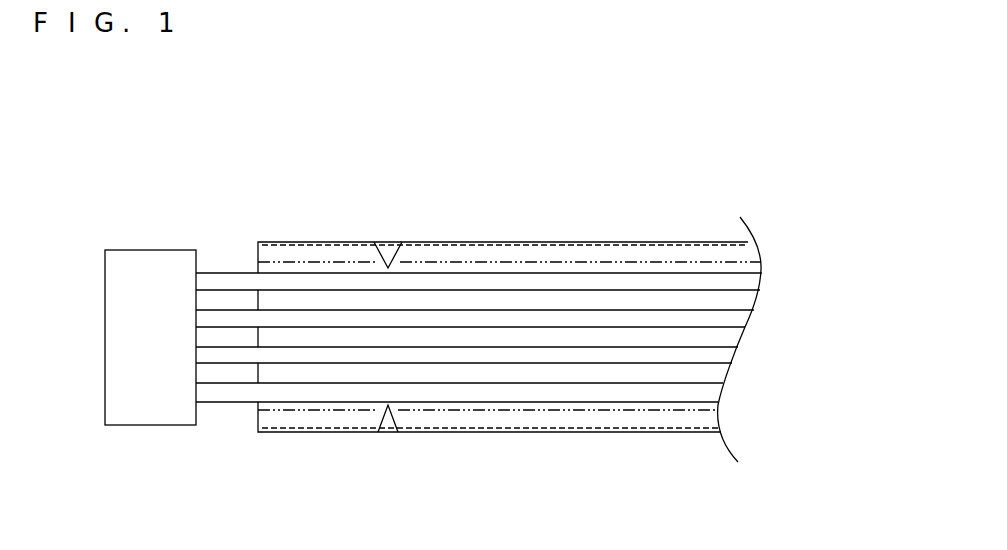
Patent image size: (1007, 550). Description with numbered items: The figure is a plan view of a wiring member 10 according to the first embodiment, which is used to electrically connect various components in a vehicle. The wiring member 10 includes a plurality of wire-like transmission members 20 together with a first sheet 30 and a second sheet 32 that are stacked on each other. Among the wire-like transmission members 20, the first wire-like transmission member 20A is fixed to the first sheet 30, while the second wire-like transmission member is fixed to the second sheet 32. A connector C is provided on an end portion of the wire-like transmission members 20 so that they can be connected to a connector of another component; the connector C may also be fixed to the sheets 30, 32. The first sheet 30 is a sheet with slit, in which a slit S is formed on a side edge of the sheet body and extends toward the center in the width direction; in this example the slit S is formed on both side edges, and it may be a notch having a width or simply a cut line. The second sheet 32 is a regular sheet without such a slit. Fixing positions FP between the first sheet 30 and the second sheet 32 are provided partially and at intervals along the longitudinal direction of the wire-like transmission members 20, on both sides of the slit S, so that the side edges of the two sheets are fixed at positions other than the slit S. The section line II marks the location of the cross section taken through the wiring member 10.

The wiring member 10 is at (148, 103).
The connector C is at (150, 313).
The wire-like transmission member 20 is at (476, 374).
The first wire-like transmission member 20A is at (476, 374).
The fixing position FP is at (509, 337).
The first sheet 30 is at (509, 294).
The second sheet 32 is at (367, 338).
The slit S is at (406, 339).
The section line II is at (353, 340).